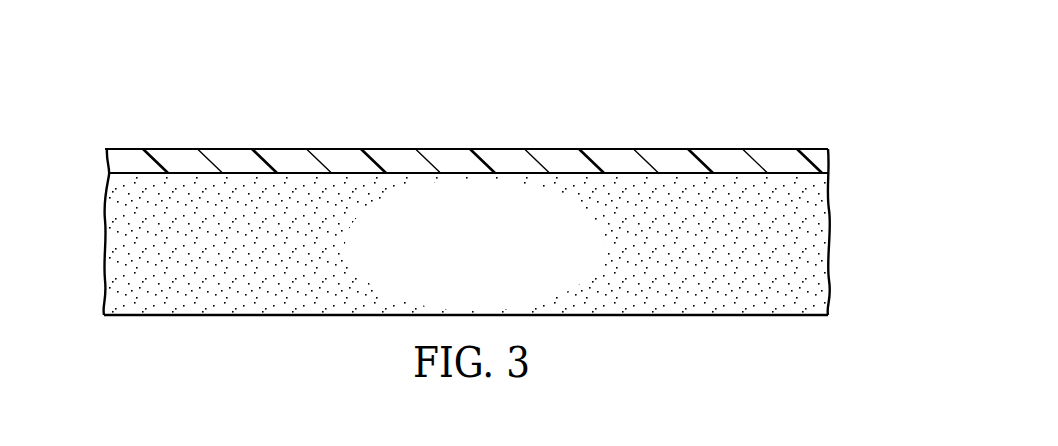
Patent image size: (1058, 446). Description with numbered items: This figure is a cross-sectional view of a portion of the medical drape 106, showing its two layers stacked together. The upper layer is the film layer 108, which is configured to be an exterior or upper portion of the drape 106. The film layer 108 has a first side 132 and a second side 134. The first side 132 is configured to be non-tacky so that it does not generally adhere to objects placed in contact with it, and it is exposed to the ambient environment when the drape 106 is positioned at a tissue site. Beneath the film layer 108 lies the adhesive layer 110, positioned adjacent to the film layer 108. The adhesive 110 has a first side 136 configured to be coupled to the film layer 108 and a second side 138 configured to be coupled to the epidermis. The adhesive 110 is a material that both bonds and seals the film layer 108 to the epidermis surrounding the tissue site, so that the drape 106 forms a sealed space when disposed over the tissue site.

The drape 106 is at (672, 68).
The film layer 108 is at (400, 157).
The adhesive layer 110 is at (490, 255).
The first side 132 is at (232, 147).
The second side 134 is at (805, 177).
The first side 136 is at (510, 173).
The second side 138 is at (755, 315).